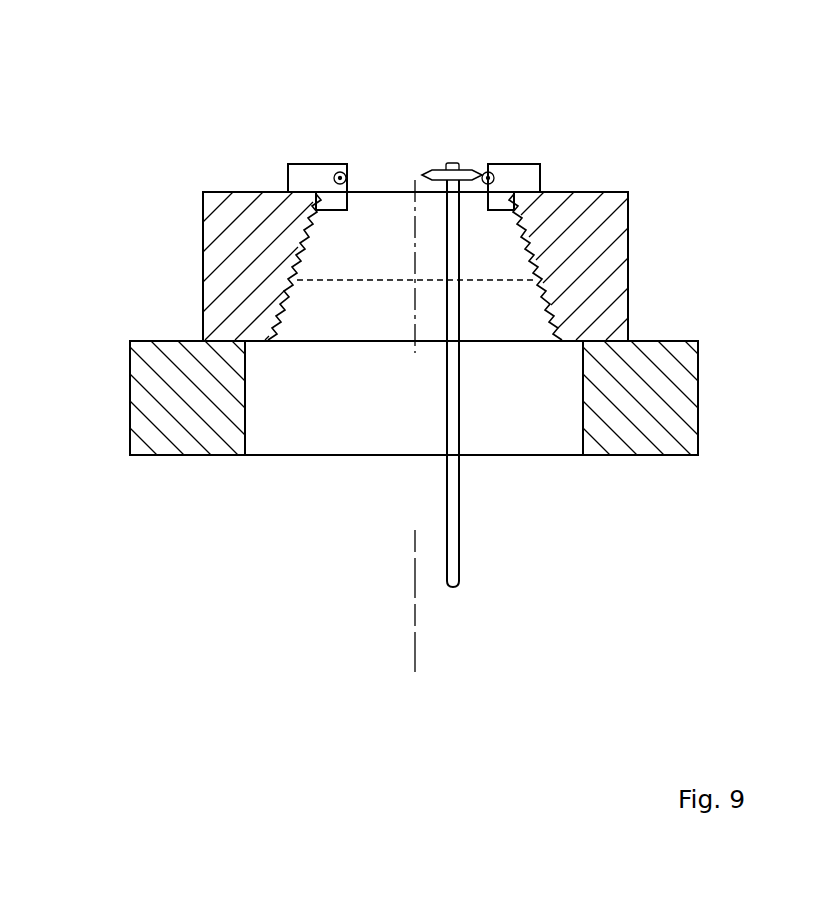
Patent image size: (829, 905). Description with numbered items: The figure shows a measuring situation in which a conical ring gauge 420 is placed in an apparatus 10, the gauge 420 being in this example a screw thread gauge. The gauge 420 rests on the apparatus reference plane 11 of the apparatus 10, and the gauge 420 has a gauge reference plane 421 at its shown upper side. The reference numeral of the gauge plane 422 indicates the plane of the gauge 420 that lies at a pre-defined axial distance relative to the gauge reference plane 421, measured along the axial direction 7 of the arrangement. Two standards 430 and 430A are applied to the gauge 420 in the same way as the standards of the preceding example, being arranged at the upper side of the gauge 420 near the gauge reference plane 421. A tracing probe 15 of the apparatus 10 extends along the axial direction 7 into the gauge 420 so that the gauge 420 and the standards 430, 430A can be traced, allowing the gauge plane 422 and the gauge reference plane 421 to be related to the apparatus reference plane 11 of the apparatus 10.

The axial direction 7 is at (415, 612).
The apparatus 10 is at (100, 395).
The apparatus reference plane 11 is at (175, 340).
The tracing probe 15 is at (451, 135).
The conical ring gauge 420 is at (208, 70).
The gauge reference plane 421 is at (250, 192).
The gauge plane 422 is at (348, 280).
The standard 430 is at (323, 143).
The standard 430A is at (505, 132).